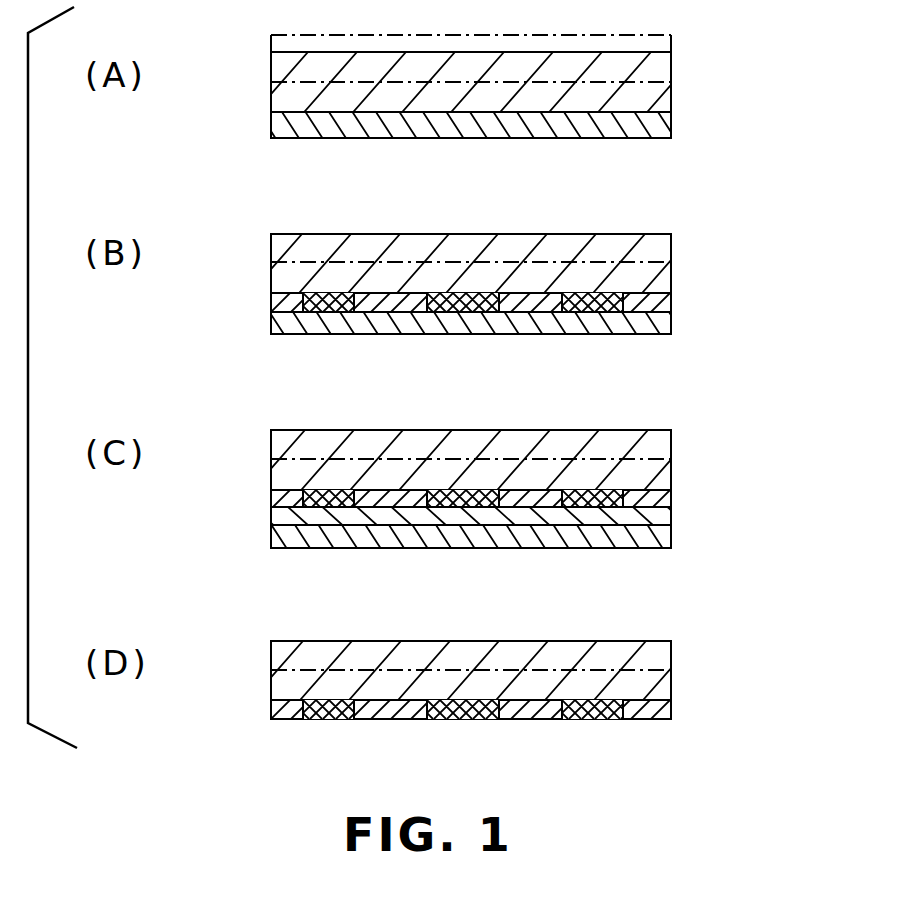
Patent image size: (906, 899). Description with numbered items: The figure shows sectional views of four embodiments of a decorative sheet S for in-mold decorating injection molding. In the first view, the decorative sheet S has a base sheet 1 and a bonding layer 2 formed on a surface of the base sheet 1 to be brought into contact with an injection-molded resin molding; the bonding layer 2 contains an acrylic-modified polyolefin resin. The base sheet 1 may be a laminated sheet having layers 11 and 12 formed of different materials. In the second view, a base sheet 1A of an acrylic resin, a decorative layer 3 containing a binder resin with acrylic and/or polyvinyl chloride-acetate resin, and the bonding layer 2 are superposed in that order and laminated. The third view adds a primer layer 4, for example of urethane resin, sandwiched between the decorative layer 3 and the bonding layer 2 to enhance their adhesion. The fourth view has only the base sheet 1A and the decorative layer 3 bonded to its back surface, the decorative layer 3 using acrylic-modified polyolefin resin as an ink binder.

The decorative sheet S is at (507, 359).
The base sheet 1 is at (662, 67).
The base sheet 1A is at (514, 464).
The layer 11 is at (450, 375).
The layer 12 is at (450, 382).
The bonding layer 2 is at (502, 338).
The decorative layer 3 is at (473, 370).
The primer layer 4 is at (667, 508).